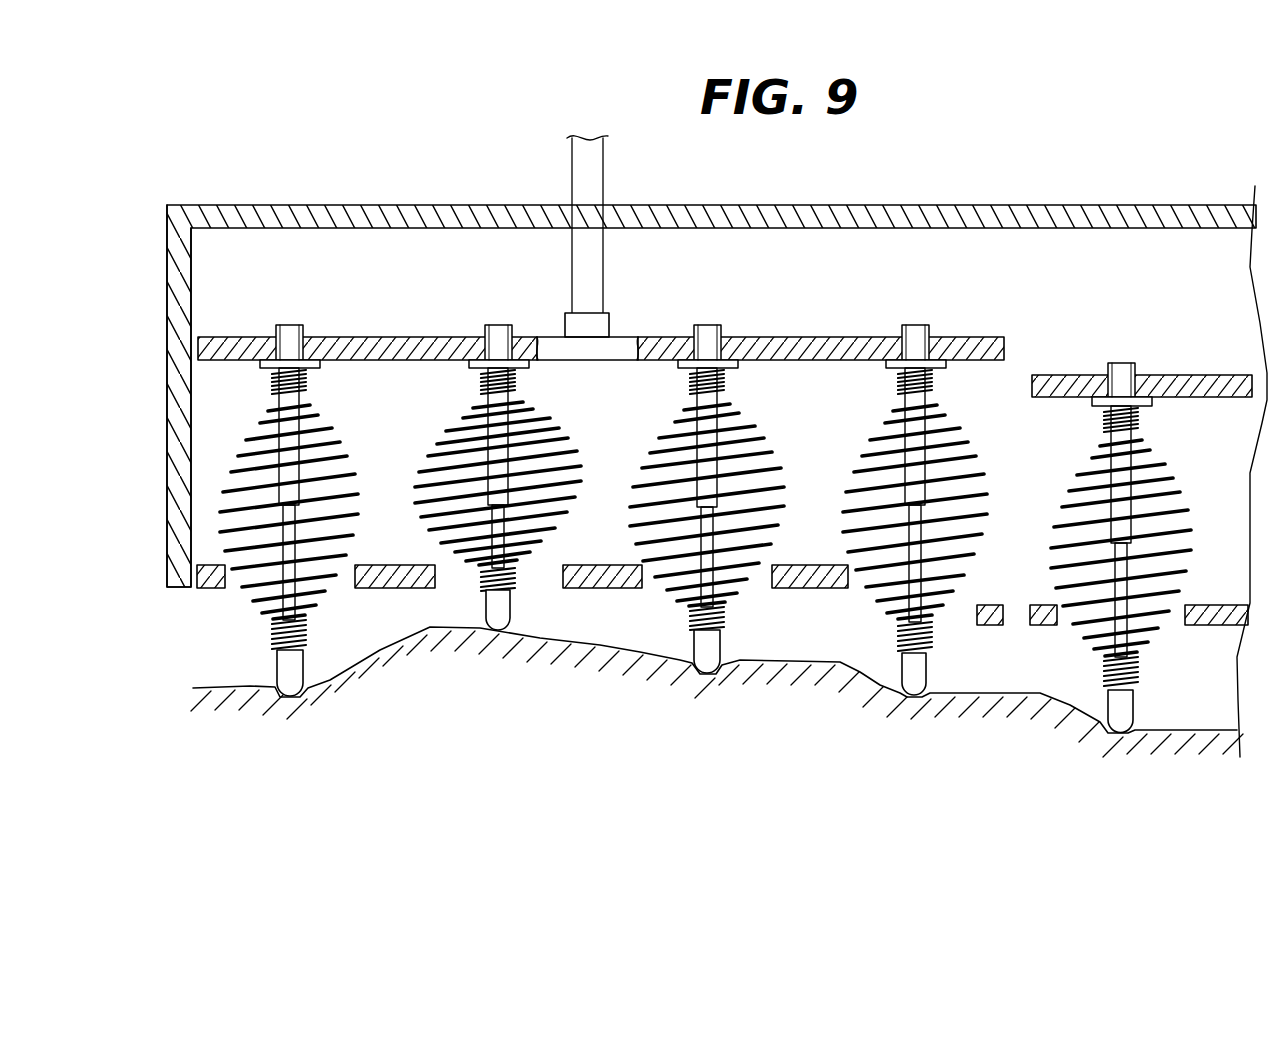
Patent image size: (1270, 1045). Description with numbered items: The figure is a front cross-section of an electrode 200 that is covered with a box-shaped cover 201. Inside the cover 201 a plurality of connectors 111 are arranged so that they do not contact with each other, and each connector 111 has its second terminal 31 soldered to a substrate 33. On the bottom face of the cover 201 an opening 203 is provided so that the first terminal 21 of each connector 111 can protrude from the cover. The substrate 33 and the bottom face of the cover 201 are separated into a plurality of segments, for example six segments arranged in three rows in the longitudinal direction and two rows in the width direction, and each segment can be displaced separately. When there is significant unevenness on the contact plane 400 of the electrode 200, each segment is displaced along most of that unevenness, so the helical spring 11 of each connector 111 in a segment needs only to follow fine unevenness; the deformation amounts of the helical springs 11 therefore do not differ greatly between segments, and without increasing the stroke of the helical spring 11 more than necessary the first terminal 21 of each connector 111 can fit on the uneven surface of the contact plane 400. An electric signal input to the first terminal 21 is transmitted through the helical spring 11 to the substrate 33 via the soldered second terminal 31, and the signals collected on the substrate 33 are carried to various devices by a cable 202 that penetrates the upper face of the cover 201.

The electrode 200 is at (1003, 185).
The cover 201 is at (166, 483).
The cable 202 is at (603, 172).
The opening 203 is at (345, 582).
The second terminal 31 is at (290, 326).
The substrate 33 is at (398, 337).
The connector 111 is at (340, 437).
The helical spring 11 is at (356, 516).
The first terminal 21 is at (283, 672).
The contact plane 400 is at (592, 716).